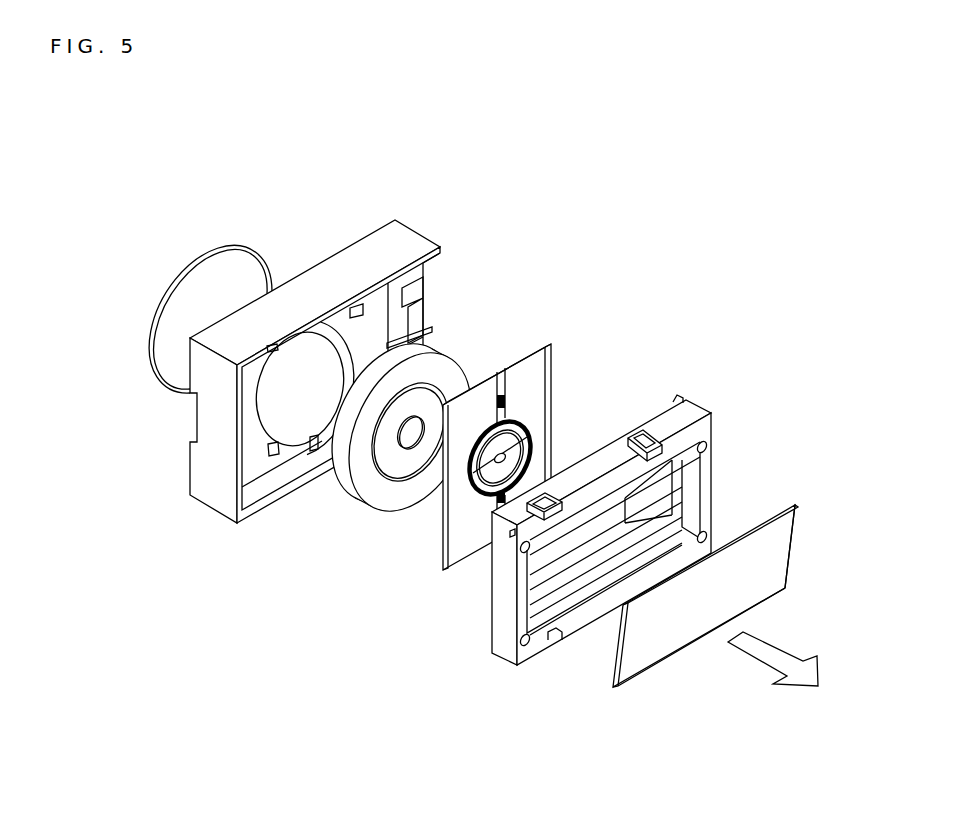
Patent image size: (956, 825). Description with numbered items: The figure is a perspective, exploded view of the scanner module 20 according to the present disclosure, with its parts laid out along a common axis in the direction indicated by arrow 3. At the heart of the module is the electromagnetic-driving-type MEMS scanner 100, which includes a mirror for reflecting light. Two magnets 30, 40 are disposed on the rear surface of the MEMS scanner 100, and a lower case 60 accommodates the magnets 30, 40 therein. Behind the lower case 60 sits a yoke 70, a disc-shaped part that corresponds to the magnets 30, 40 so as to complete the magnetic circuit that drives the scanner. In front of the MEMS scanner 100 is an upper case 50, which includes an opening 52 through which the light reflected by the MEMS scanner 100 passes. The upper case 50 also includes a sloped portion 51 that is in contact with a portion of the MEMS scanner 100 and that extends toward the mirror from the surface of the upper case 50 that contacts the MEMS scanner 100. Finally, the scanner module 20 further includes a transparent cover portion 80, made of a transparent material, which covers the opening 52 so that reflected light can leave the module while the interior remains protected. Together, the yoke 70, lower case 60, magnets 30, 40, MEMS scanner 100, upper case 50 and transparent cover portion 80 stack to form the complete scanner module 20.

The scanner module 20 is at (223, 124).
The yoke 70 is at (245, 257).
The lower case 60 is at (328, 357).
The magnet 40 is at (402, 438).
The magnet 30 is at (393, 467).
The MEMS scanner 100 is at (530, 404).
The upper case 50 is at (600, 517).
The sloped portion 51 is at (658, 495).
The opening 52 is at (548, 554).
The transparent cover portion 80 is at (637, 644).
The direction arrow 3 is at (773, 659).